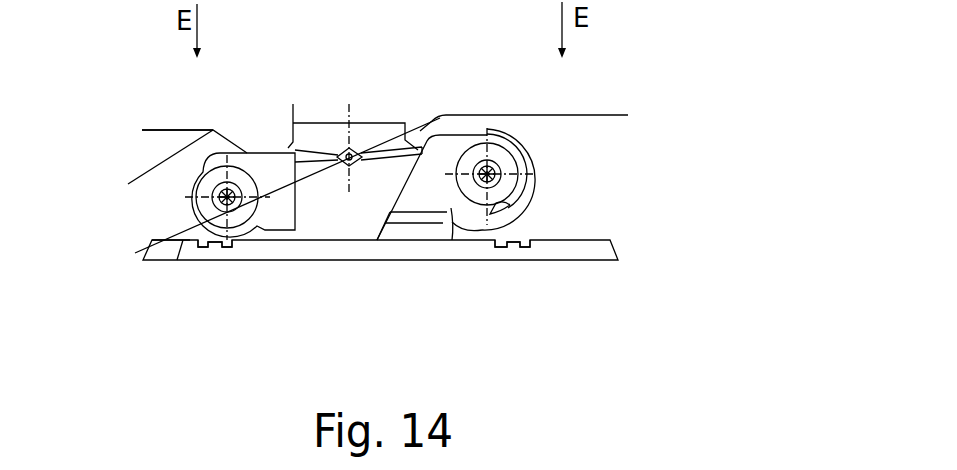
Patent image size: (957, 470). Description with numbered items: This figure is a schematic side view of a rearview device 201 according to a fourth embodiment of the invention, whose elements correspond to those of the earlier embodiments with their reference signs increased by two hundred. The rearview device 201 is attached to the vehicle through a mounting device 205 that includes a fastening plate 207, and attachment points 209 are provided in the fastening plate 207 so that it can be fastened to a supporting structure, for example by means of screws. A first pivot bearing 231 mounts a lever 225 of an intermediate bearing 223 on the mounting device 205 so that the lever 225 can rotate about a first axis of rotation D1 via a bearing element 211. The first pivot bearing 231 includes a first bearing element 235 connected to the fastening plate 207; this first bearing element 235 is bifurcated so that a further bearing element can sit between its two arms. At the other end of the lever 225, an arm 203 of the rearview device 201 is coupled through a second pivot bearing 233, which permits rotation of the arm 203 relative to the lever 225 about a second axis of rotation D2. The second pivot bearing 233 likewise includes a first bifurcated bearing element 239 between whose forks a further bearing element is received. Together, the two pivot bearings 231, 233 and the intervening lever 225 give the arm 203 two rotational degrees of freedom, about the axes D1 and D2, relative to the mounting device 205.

The rearview device 201 is at (610, 154).
The arm 203 is at (368, 132).
The mounting device 205 is at (410, 268).
The fastening plate 207 is at (378, 262).
The attachment points 209 is at (215, 248).
The bearing element 211 is at (351, 262).
The intermediate bearing 223 is at (335, 218).
The lever 225 is at (297, 244).
The first pivot bearing 231 is at (542, 178).
The second pivot bearing 233 is at (180, 188).
The first bearing element 235 is at (456, 242).
The first bifurcated bearing element 239 is at (261, 160).
The axis of rotation D1 is at (483, 150).
The second axis of rotation D2 is at (236, 158).